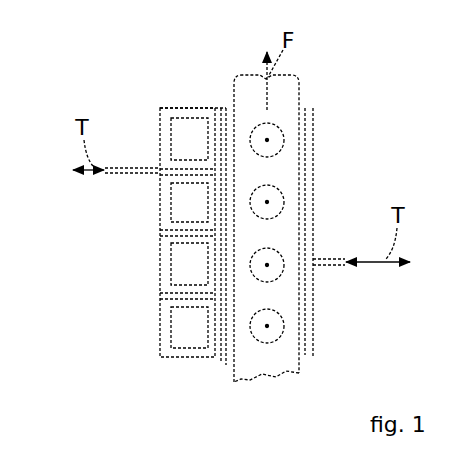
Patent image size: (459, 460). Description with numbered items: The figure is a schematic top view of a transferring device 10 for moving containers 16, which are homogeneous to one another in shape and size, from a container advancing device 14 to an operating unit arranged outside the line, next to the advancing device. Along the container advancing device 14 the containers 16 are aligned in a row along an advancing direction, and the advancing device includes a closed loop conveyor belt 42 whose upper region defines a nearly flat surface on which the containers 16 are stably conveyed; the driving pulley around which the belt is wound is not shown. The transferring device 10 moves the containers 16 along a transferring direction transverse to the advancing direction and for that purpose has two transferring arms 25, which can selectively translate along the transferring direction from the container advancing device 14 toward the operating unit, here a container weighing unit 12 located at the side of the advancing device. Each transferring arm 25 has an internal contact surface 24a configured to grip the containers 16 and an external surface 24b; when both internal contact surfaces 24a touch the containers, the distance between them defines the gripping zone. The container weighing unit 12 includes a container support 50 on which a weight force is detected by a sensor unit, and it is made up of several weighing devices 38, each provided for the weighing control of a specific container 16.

The transferring device 10 is at (253, 67).
The container weighing unit 12 is at (120, 310).
The container advancing device 14 is at (302, 71).
The containers 16 is at (268, 140).
The internal contact surface 24a is at (234, 368).
The external surface 24b is at (225, 344).
The transferring arms 25 is at (221, 106).
The weighing devices 38 is at (168, 118).
The conveyor belt 42 is at (274, 297).
The container support 50 is at (190, 140).